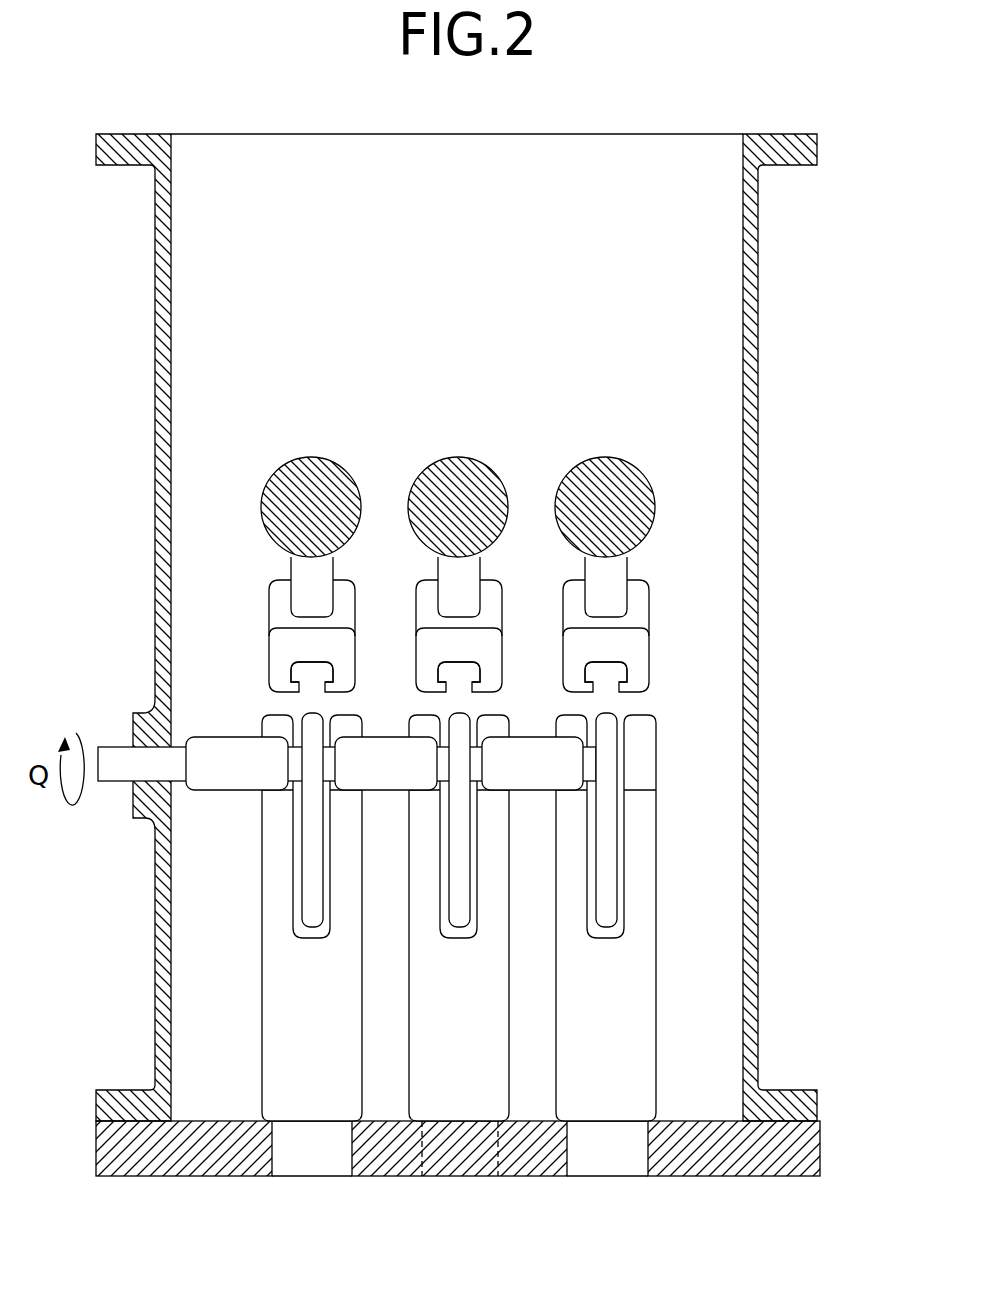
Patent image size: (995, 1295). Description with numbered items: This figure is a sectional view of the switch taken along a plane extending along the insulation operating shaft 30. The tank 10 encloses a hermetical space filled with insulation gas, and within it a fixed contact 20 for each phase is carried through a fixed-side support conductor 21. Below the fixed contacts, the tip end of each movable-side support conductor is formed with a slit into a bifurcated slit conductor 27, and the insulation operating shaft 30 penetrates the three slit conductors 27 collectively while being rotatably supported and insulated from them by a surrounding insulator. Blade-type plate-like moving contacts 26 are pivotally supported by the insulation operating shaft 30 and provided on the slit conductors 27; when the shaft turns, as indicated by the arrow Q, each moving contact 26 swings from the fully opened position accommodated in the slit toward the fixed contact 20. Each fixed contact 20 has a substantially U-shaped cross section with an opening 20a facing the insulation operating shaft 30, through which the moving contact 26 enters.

The tank 10 is at (758, 245).
The fixed contact 20 is at (355, 668).
The opening 20a is at (309, 675).
The fixed-side support conductor 21 is at (338, 466).
The moving contact 26 is at (323, 915).
The slit conductor 27 is at (656, 855).
The insulation operating shaft 30 is at (533, 792).